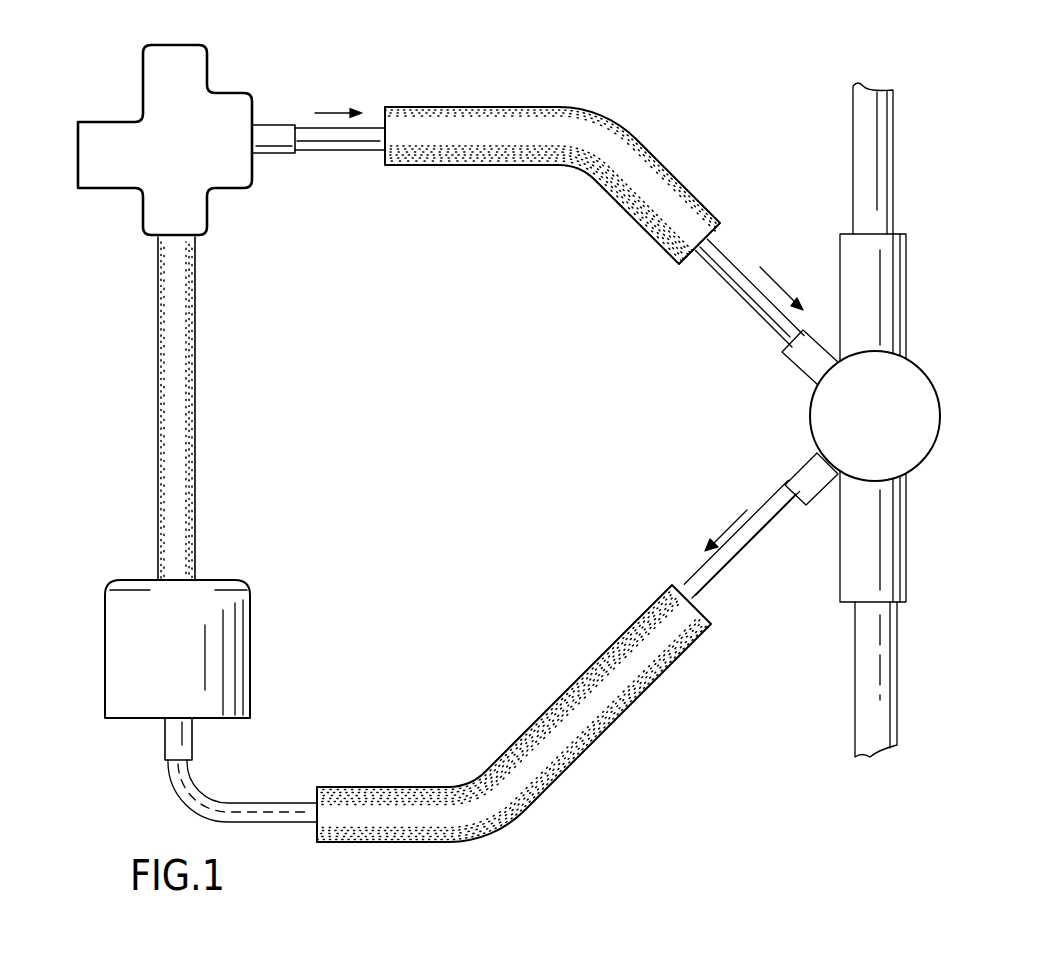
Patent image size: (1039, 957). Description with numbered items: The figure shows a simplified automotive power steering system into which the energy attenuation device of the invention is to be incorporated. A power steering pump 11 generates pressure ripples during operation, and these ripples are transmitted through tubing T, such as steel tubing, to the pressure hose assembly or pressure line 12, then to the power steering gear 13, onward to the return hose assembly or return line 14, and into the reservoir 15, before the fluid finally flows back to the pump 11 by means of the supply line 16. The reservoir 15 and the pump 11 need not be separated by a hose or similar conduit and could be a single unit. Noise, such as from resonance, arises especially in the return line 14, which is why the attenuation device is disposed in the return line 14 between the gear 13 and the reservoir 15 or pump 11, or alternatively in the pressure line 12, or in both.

The power steering pump 11 is at (208, 67).
The pressure hose assembly or pressure line 12 is at (655, 170).
The power steering gear 13 is at (928, 413).
The return hose assembly or return line 14 is at (575, 698).
The reservoir 15 is at (237, 655).
The supply line 16 is at (196, 391).
The tubing T is at (363, 143).